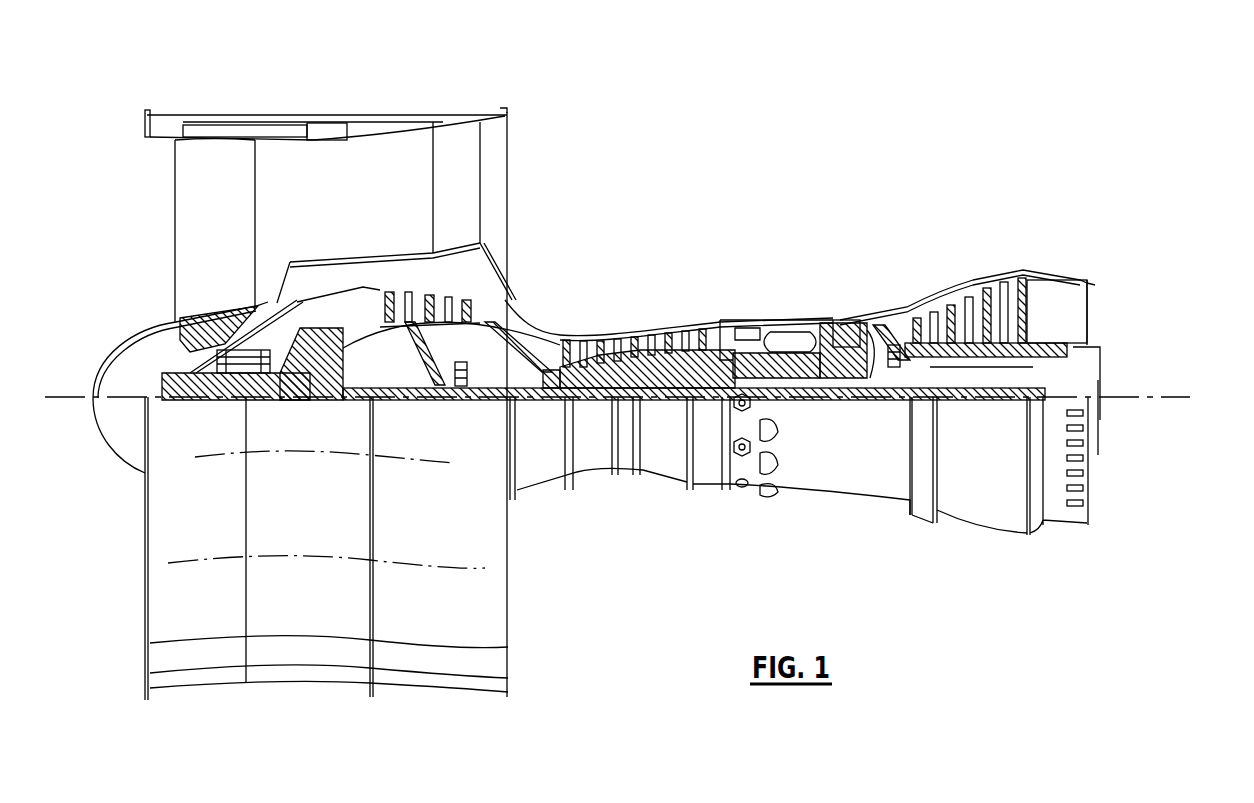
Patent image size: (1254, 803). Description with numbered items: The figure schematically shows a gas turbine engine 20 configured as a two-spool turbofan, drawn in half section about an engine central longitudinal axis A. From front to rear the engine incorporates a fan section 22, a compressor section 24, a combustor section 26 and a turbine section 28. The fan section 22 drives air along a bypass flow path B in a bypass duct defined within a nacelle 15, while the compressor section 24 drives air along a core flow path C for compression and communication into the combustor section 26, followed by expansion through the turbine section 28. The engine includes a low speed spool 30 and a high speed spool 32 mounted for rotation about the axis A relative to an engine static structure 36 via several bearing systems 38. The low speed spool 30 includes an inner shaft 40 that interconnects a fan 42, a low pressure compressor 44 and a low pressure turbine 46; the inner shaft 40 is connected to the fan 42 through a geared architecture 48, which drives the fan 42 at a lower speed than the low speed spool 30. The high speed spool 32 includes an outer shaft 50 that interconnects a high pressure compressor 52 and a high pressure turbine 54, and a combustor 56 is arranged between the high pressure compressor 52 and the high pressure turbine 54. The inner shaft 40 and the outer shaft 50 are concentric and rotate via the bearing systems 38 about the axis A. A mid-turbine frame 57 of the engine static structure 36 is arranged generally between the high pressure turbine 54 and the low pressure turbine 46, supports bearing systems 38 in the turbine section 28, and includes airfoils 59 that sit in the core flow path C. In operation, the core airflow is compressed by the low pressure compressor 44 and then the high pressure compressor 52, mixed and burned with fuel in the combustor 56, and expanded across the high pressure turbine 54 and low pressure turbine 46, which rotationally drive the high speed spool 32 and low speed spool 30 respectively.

The nacelle 15 is at (326, 122).
The gas turbine engine 20 is at (792, 163).
The fan section 22 is at (257, 103).
The compressor section 24 is at (556, 305).
The combustor section 26 is at (780, 293).
The turbine section 28 is at (930, 255).
The low speed spool 30 is at (667, 402).
The high speed spool 32 is at (704, 362).
The engine static structure 36 is at (707, 402).
The bearing systems 38 is at (463, 388).
The inner shaft 40 is at (523, 398).
The fan 42 is at (228, 246).
The low pressure compressor 44 is at (427, 310).
The low pressure turbine 46 is at (975, 280).
The geared architecture 48 is at (335, 380).
The outer shaft 50 is at (790, 400).
The high pressure compressor 52 is at (640, 335).
The high pressure turbine 54 is at (846, 320).
The combustor 56 is at (780, 334).
The mid-turbine frame 57 is at (892, 305).
The airfoils 59 is at (915, 362).
The engine central longitudinal axis A is at (1170, 397).
The bypass flow path B is at (292, 190).
The core flow path C is at (332, 300).